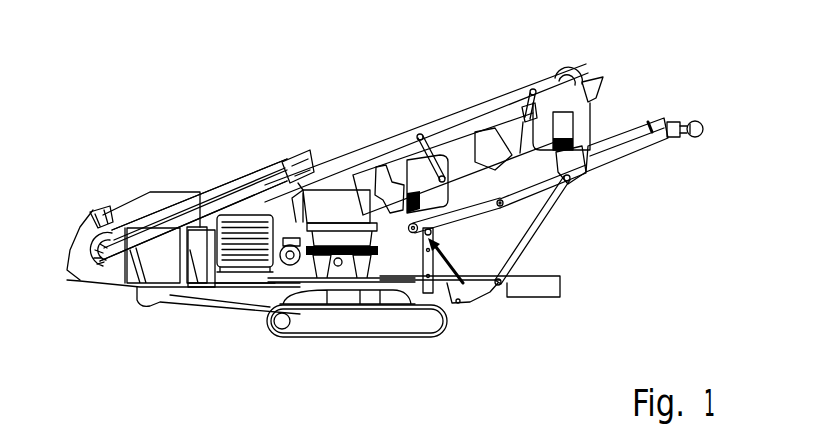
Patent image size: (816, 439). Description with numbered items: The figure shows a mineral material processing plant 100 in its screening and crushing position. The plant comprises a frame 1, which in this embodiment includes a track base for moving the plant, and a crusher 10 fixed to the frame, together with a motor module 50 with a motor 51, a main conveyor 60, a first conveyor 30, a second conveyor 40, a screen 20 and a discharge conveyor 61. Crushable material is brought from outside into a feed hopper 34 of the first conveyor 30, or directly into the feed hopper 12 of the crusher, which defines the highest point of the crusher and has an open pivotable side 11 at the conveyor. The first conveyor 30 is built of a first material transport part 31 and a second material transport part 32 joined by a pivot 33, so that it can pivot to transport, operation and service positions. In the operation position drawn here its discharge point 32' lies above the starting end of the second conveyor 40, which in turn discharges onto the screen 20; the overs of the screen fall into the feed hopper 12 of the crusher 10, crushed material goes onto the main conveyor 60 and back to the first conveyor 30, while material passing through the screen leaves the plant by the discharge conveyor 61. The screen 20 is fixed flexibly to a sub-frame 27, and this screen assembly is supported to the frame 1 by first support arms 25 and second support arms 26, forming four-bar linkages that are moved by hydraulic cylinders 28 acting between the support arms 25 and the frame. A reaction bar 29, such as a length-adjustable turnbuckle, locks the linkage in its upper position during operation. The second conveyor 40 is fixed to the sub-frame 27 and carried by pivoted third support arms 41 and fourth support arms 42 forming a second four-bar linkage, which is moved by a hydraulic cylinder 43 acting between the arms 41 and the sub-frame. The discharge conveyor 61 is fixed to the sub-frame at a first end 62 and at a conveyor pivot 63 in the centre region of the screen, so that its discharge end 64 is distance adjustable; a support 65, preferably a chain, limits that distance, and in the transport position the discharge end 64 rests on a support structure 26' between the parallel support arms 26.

The mineral material processing plant 100 is at (341, 41).
The frame 1 is at (257, 307).
The crusher 10 is at (338, 195).
The open pivotable side 11 is at (337, 192).
The feed hopper 12 is at (343, 200).
The screen 20 is at (610, 72).
The first support arms 25 is at (424, 242).
The second support arms 26 is at (539, 258).
The support structure 26' is at (561, 214).
The sub-frame 27 is at (560, 158).
The hydraulic cylinders 28 is at (457, 303).
The reaction bar 29 is at (445, 251).
The first conveyor 30 is at (192, 142).
The first material transport part 31 is at (160, 208).
The second material transport part 32 is at (199, 173).
The discharge point 32' is at (300, 136).
The pivot 33 is at (213, 200).
The feed hopper 34 is at (137, 210).
The second conveyor 40 is at (483, 110).
The third support arms 41 is at (420, 134).
The fourth support arms 42 is at (533, 89).
The hydraulic cylinder 43 is at (438, 162).
The motor module 50 is at (207, 240).
The motor 51 is at (300, 262).
The main conveyor 60 is at (160, 260).
The discharge conveyor 61 is at (620, 160).
The first end 62 is at (400, 248).
The conveyor pivot 63 is at (500, 203).
The discharge end 64 is at (692, 120).
The support 65 is at (650, 127).